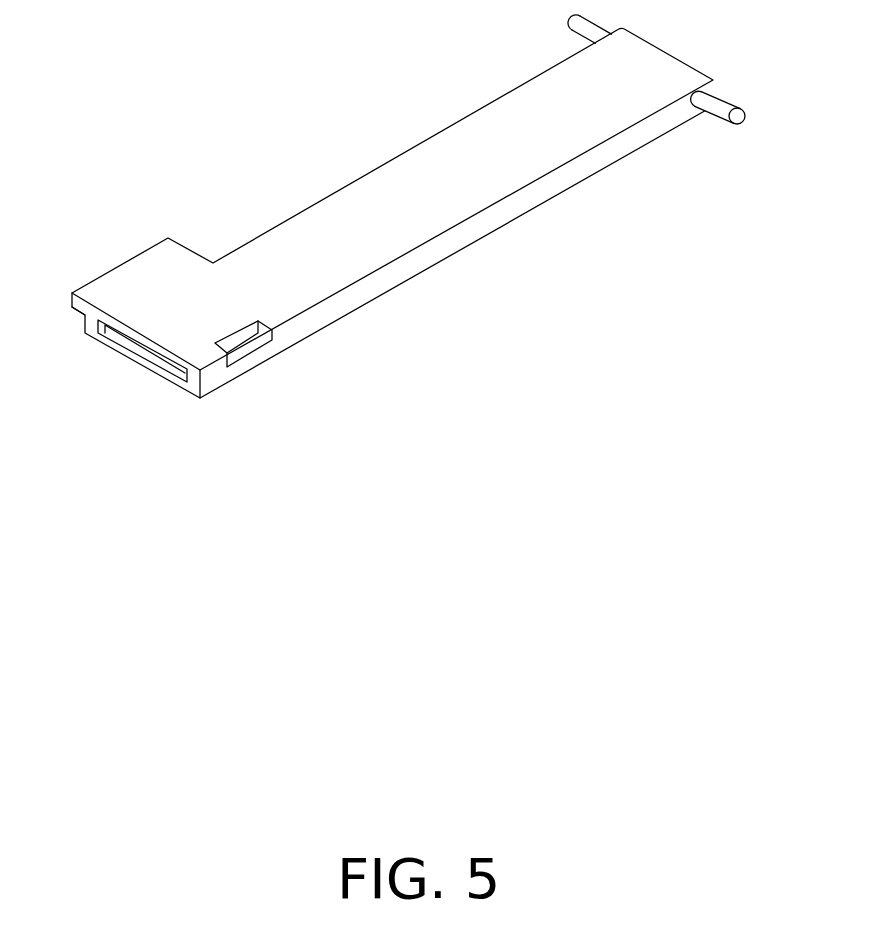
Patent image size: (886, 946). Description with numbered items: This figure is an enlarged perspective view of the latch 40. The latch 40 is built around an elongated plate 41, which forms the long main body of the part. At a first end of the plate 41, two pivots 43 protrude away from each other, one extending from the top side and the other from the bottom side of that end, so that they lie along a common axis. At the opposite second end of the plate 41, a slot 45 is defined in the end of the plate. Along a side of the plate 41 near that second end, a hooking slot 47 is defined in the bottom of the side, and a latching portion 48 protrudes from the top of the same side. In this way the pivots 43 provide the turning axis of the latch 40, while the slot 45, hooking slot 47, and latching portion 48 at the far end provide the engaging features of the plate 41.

The latch 40 is at (415, 226).
The elongated plate 41 is at (465, 178).
The pivot 43 is at (723, 102).
The slot 45 is at (133, 343).
The hooking slot 47 is at (247, 346).
The latching portion 48 is at (73, 304).